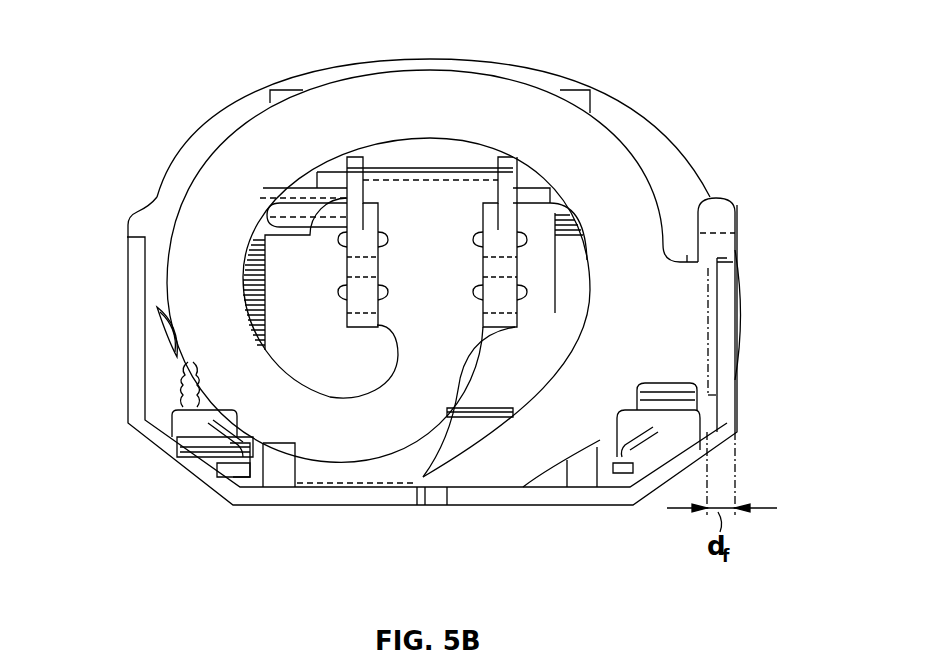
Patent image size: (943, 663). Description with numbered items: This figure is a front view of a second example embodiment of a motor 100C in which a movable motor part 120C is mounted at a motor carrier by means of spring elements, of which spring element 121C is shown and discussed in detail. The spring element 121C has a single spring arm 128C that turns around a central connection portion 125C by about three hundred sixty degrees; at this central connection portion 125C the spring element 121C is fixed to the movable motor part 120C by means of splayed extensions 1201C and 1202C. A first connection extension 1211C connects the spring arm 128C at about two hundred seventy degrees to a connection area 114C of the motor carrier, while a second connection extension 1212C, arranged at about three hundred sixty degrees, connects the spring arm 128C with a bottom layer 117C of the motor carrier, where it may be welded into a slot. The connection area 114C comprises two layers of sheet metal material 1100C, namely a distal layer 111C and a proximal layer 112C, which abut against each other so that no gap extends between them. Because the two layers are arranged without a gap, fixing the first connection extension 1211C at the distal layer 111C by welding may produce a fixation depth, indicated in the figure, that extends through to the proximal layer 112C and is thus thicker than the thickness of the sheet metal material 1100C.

The motor 100C is at (157, 98).
The splayed extension 1201C is at (362, 233).
The spring element 121C is at (424, 105).
The splayed extension 1202C is at (498, 233).
The movable motor part 120C is at (597, 105).
The first connection extension 1211C is at (739, 277).
The connection area 114C is at (752, 295).
The distal layer 111C is at (725, 318).
The proximal layer 112C is at (713, 349).
The spring arm 128C is at (200, 313).
The sheet metal material 1100C is at (160, 450).
The bottom layer 117C is at (330, 496).
The second connection extension 1212C is at (482, 481).
The central connection portion 125C is at (437, 270).